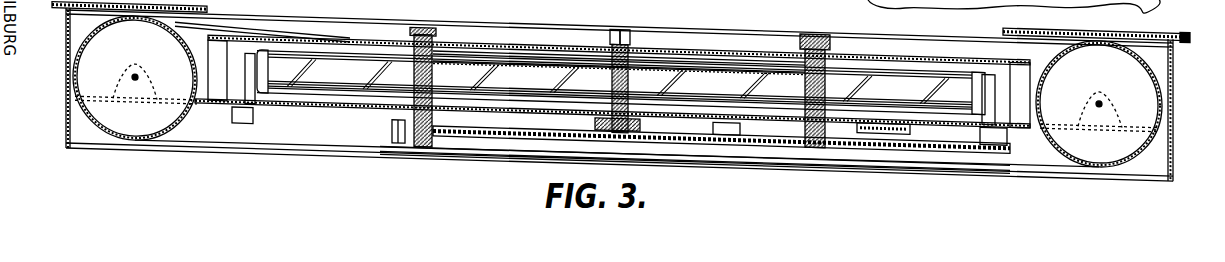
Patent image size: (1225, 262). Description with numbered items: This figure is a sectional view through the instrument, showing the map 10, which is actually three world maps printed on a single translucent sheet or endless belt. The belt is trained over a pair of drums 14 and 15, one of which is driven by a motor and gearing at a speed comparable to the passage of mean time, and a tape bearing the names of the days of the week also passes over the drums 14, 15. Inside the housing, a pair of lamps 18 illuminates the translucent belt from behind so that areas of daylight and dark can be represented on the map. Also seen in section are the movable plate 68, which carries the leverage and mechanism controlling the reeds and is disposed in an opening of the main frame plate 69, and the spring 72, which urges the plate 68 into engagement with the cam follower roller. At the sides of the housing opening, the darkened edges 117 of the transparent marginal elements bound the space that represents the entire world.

The map 10 is at (707, 25).
The drum 14 is at (86, 40).
The drum 15 is at (1050, 69).
The lamp 18 is at (342, 82).
The movable plate 68 is at (365, 110).
The main frame plate 69 is at (963, 127).
The spring 72 is at (862, 130).
The darkened edge 117 is at (236, 11).